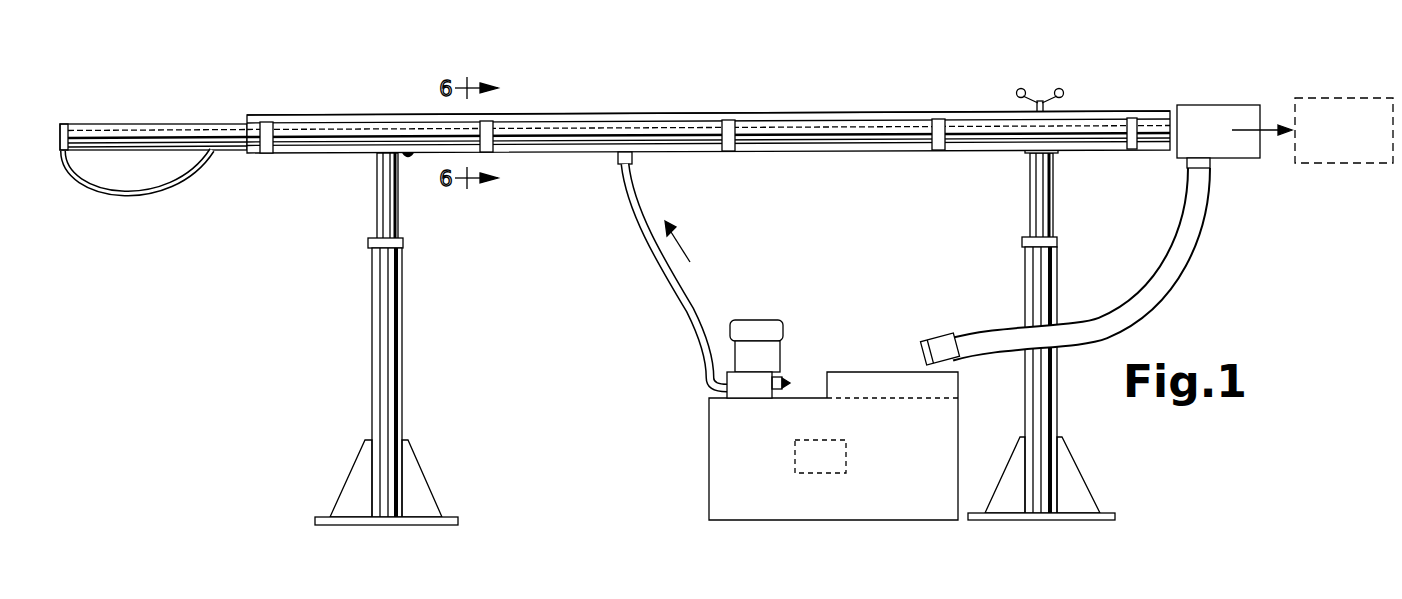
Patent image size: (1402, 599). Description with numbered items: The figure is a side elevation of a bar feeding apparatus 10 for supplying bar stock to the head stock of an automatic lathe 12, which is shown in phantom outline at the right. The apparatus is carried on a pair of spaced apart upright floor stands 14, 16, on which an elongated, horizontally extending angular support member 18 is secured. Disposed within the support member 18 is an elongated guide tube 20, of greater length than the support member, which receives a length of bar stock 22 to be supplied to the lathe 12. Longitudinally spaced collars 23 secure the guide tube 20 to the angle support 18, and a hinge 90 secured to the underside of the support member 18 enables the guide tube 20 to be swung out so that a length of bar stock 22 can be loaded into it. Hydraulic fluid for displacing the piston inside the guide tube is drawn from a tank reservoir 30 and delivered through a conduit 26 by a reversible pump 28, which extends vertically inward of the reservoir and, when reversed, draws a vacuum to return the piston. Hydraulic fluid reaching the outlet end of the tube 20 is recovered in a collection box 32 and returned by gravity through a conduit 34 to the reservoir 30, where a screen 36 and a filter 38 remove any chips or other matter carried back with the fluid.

The bar feeding apparatus 10 is at (628, 95).
The automatic lathe 12 is at (1325, 163).
The upright floor stand 14 is at (402, 387).
The upright floor stand 16 is at (1050, 396).
The angular support member 18 is at (313, 115).
The guide tube 20 is at (397, 136).
The bar stock 22 is at (1240, 132).
The collar 23 is at (938, 119).
The conduit 26 is at (150, 197).
The reversible pump 28 is at (783, 352).
The tank reservoir 30 is at (886, 464).
The collection box 32 is at (1217, 110).
The conduit 34 is at (1157, 277).
The screen 36 is at (892, 378).
The filter 38 is at (820, 472).
The hinge 90 is at (409, 158).